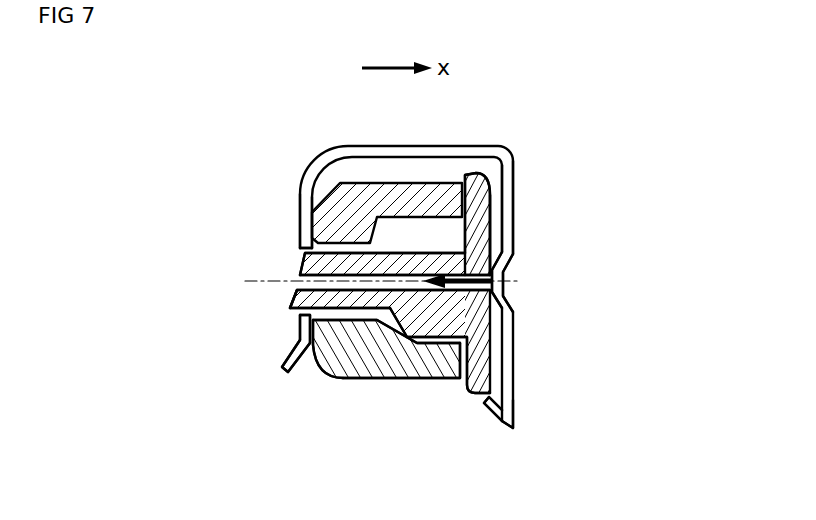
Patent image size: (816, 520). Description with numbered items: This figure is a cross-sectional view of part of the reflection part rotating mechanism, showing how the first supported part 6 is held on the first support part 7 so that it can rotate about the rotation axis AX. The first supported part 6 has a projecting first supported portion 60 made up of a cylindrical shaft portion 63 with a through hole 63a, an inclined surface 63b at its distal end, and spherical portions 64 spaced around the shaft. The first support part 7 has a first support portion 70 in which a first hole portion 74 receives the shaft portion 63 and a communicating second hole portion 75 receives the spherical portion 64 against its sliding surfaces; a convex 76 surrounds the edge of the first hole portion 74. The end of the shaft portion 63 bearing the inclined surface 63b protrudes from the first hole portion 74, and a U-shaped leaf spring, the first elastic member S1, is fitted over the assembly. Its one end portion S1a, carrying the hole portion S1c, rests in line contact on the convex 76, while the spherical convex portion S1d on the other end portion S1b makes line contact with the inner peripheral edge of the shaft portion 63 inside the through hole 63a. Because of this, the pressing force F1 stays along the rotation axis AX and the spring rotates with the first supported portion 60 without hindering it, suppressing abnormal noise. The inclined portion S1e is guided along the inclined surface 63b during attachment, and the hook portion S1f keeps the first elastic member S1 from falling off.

The first elastic member S1 is at (308, 158).
The one end portion S1a is at (302, 212).
The other end portion S1b is at (512, 190).
The hole portion S1c is at (297, 318).
The spherical convex portion S1d is at (495, 287).
The inclined portion S1e is at (298, 366).
The hook portion S1f is at (514, 430).
The first support part 7 is at (418, 183).
The first supported part 6 is at (487, 176).
The force F1 is at (483, 250).
The shaft portion 63 is at (320, 266).
The through hole 63a is at (495, 273).
The inclined surface 63b is at (295, 305).
The spherical portion 64 is at (415, 323).
The first supported portion 60 is at (578, 340).
The rotation axis AX is at (363, 281).
The first support portion 70 is at (426, 397).
The first hole portion 74 is at (350, 348).
The second hole portion 75 is at (362, 378).
The convex 76 is at (316, 365).